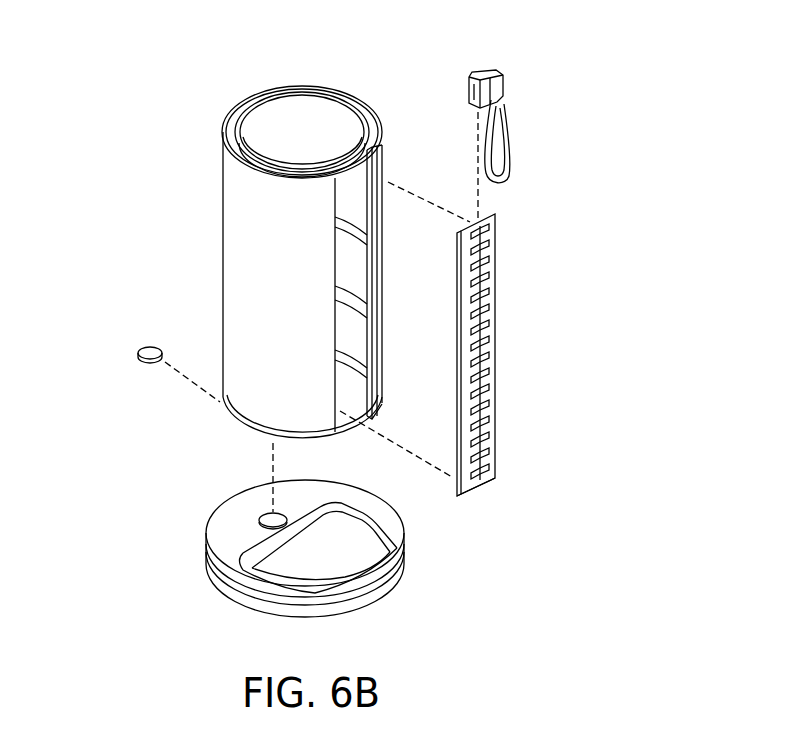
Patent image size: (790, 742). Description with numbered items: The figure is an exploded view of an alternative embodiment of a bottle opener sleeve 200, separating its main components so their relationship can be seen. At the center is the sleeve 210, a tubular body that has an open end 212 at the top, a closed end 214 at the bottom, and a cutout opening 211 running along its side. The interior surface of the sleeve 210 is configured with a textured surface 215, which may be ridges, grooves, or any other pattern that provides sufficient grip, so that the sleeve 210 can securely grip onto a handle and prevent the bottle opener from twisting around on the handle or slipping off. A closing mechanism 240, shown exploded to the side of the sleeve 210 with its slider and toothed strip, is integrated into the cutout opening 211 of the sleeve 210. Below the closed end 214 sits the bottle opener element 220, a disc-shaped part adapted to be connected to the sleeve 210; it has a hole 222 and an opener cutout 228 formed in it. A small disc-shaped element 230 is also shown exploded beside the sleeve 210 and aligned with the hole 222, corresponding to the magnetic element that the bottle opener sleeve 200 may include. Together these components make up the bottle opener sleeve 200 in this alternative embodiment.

The bottle opener sleeve 200 is at (436, 50).
The sleeve 210 is at (222, 266).
The cutout opening 211 is at (364, 174).
The open end 212 is at (240, 110).
The closed end 214 is at (262, 436).
The textured surface 215 is at (309, 150).
The bottle opener element 220 is at (222, 580).
The hole 222 is at (258, 521).
The opener cutout 228 is at (400, 521).
The plug disc 230 is at (150, 361).
The closing mechanism 240 is at (493, 257).